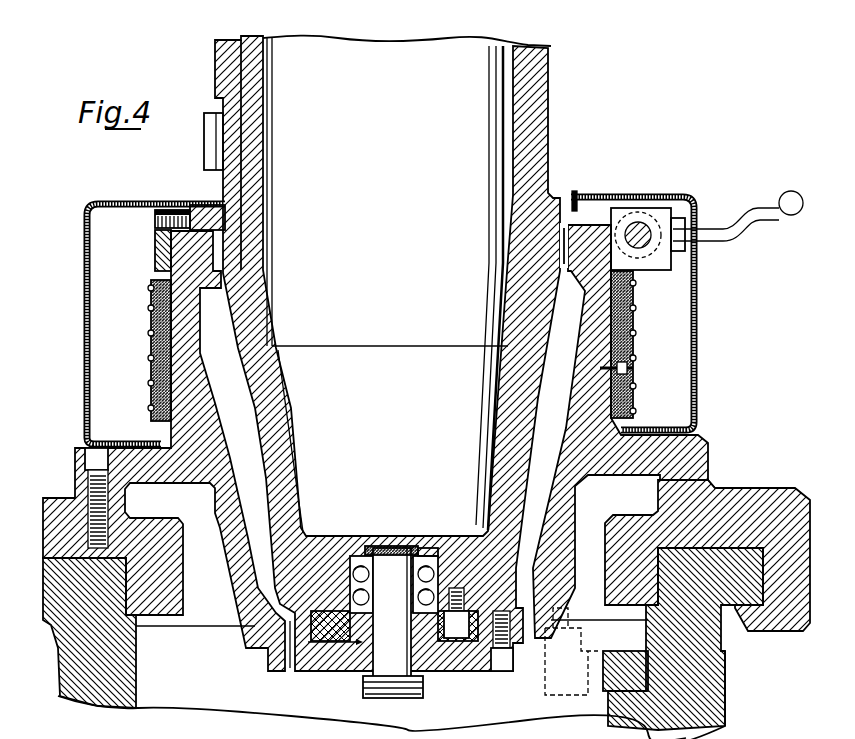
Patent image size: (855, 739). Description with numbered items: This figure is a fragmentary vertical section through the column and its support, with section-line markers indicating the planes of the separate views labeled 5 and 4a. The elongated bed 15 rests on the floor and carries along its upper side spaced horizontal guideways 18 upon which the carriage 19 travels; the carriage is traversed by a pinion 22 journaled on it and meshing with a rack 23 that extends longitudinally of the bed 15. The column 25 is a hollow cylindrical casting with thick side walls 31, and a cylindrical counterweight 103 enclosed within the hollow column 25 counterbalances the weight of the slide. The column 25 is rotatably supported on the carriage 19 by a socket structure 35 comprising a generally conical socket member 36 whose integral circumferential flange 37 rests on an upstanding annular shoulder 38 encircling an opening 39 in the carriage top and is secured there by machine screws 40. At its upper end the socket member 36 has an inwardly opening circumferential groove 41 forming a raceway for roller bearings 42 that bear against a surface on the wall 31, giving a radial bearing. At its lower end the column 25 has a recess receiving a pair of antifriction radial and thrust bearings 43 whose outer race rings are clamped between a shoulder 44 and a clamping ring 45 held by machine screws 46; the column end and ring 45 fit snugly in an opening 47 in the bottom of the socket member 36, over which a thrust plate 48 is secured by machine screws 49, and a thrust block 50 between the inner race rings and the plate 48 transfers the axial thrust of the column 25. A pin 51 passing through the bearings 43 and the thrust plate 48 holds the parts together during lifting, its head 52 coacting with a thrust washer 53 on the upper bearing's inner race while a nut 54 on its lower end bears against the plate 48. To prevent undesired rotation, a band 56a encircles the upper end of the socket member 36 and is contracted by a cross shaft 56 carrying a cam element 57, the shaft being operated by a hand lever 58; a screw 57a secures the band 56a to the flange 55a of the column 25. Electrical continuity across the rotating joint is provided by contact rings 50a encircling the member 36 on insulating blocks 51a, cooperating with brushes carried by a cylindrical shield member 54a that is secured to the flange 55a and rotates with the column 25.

The counterweight 103 is at (442, 45).
The column 25 is at (544, 57).
The side walls 31 is at (542, 92).
The socket member 36 is at (237, 568).
The bed 15 is at (714, 690).
The guideways 18 is at (42, 548).
The carriage 19 is at (757, 480).
The pinion 22 is at (565, 686).
The rack 23 is at (590, 684).
The socket structure 35 is at (700, 418).
The circumferential flange 37 is at (696, 443).
The annular shoulder 38 is at (705, 476).
The opening 39 is at (597, 540).
The machine screws 40 is at (78, 447).
The circumferential groove 41 is at (620, 431).
The roller bearings 42 is at (553, 236).
The antifriction radial and thrust bearings 43 is at (340, 567).
The shoulder 44 is at (434, 552).
The clamping ring 45 is at (328, 610).
The machine screws 46 is at (462, 588).
The opening 47 is at (335, 647).
The thrust plate 48 is at (303, 664).
The machine screws 49 is at (493, 664).
The thrust block 50 is at (357, 634).
The pin 51 is at (366, 668).
The head 52 is at (397, 540).
The thrust washer 53 is at (425, 546).
The nut 54 is at (419, 670).
The cross shaft 56 is at (634, 238).
The cam element 57 is at (636, 258).
The hand lever 58 is at (766, 190).
The contact rings 50a is at (143, 300).
The insulating blocks 51a is at (143, 360).
The cylindrical shield member 54a is at (79, 335).
The flange 55a is at (568, 192).
The band 56a is at (613, 199).
The screw 57a is at (170, 203).
The section line 5- 5 is at (470, 216).
The section line 4a- 4a is at (738, 572).